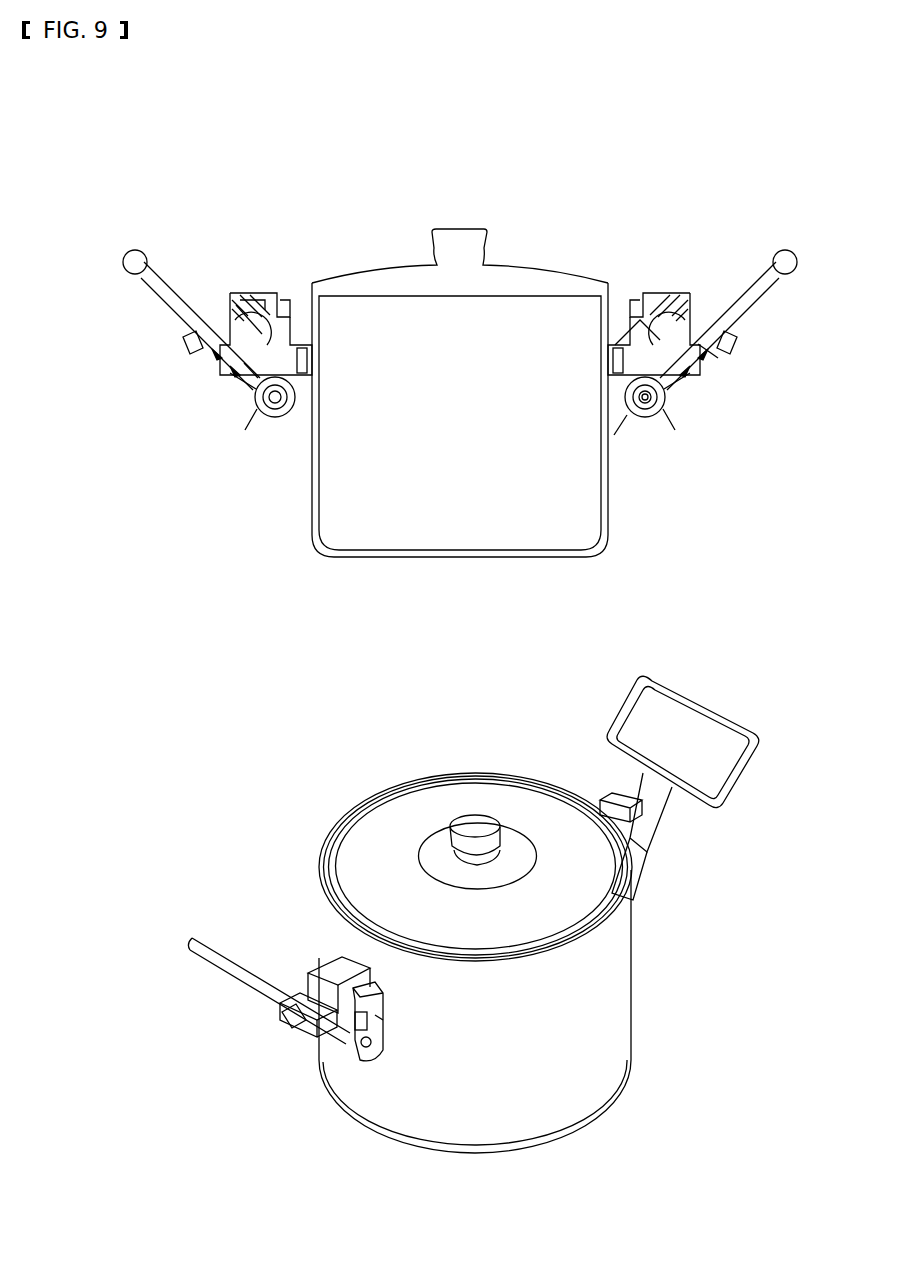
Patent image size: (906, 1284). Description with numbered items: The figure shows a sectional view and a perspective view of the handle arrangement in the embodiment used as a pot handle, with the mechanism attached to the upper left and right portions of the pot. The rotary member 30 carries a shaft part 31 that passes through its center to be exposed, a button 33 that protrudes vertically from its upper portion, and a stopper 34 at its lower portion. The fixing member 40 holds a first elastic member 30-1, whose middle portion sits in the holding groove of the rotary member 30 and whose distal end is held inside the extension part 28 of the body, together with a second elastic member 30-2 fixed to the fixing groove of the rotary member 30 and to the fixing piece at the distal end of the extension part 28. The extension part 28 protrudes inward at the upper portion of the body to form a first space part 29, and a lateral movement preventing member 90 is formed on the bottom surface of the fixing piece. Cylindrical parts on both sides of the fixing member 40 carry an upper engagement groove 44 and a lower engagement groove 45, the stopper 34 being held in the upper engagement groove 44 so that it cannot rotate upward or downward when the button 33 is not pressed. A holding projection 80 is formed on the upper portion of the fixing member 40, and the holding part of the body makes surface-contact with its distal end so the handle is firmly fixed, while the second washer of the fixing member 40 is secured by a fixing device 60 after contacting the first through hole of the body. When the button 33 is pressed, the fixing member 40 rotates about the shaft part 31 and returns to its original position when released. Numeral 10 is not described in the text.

The cooking pot body 10 is at (427, 278).
The extension part 28 is at (273, 293).
The first space part 29 is at (257, 300).
The rotary member 30 is at (257, 360).
The first elastic member 30-1 is at (250, 338).
The second elastic member 30-2 is at (228, 360).
The shaft part 31 is at (713, 357).
The button 33 is at (285, 300).
The stopper 34 is at (660, 295).
The fixing member 40 is at (273, 417).
The upper engagement groove 44 is at (642, 430).
The lower engagement groove 45 is at (662, 403).
The fixing device 60 is at (378, 1017).
The holding projection 80 is at (616, 345).
The lateral movement preventing member 90 is at (183, 340).